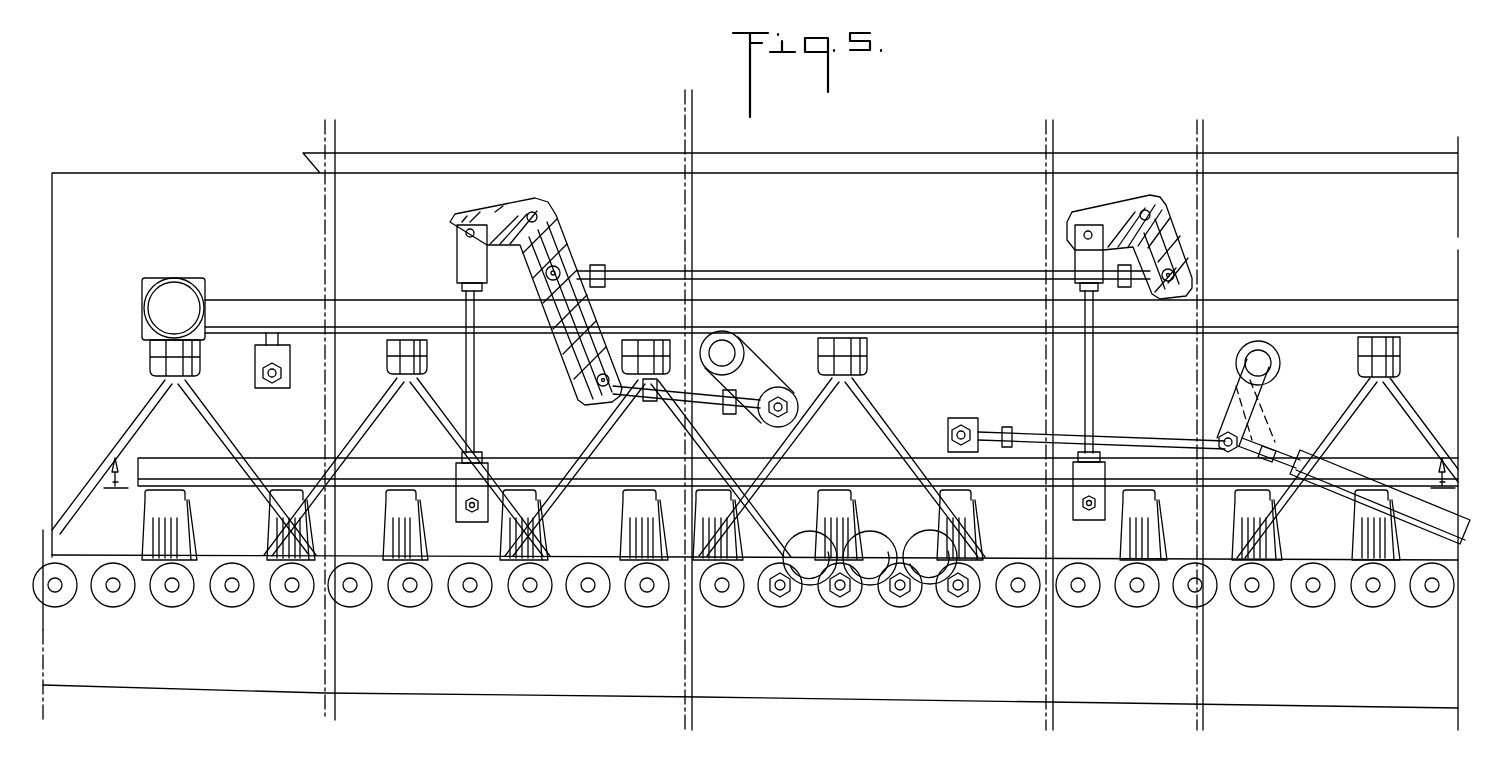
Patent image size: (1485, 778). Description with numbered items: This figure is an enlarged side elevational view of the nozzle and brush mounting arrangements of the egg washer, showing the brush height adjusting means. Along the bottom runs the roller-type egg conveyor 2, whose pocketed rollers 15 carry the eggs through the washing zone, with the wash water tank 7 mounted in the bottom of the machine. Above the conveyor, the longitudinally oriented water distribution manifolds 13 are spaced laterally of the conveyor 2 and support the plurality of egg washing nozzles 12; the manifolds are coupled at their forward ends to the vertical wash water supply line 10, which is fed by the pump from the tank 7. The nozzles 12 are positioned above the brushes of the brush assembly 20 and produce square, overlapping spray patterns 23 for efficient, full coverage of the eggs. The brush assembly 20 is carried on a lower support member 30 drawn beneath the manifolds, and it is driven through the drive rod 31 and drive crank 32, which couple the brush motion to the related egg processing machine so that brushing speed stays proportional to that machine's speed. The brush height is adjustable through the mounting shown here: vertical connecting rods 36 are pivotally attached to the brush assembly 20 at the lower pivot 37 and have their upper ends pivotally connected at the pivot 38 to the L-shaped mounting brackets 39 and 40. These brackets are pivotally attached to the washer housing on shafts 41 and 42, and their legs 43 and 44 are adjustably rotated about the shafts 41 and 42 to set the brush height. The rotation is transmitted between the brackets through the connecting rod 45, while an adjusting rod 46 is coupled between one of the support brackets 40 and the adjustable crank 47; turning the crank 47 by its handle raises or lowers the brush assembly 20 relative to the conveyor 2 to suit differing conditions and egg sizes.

The egg conveyor 2 is at (1014, 608).
The wash water tank 7 is at (115, 455).
The wash water supply line 10 is at (190, 283).
The egg washing nozzles 12 is at (425, 358).
The water distribution manifolds 13 is at (1288, 311).
The pocketed rollers 15 is at (1310, 600).
The brush assembly 20 is at (902, 455).
The spray patterns 23 is at (866, 397).
The lower support beam 30 is at (262, 457).
The drive rod 31 is at (1350, 490).
The drive crank 32 is at (1255, 402).
The vertical connecting rods 36 is at (478, 421).
The pivotal attachment of connecting rods to brush assembly 37 is at (470, 522).
The pivotal connection of connecting rods to brackets 38 is at (463, 233).
The L-shaped mounting bracket 39 is at (1160, 226).
The L-shaped mounting bracket 40 is at (557, 244).
The shaft 41 is at (1152, 214).
The shaft 42 is at (538, 215).
The leg of L-shaped bracket 43 is at (1186, 253).
The leg of L-shaped bracket 44 is at (572, 353).
The connecting rod 45 is at (896, 273).
The adjusting rod 46 is at (709, 412).
The adjustable crank 47 is at (757, 364).